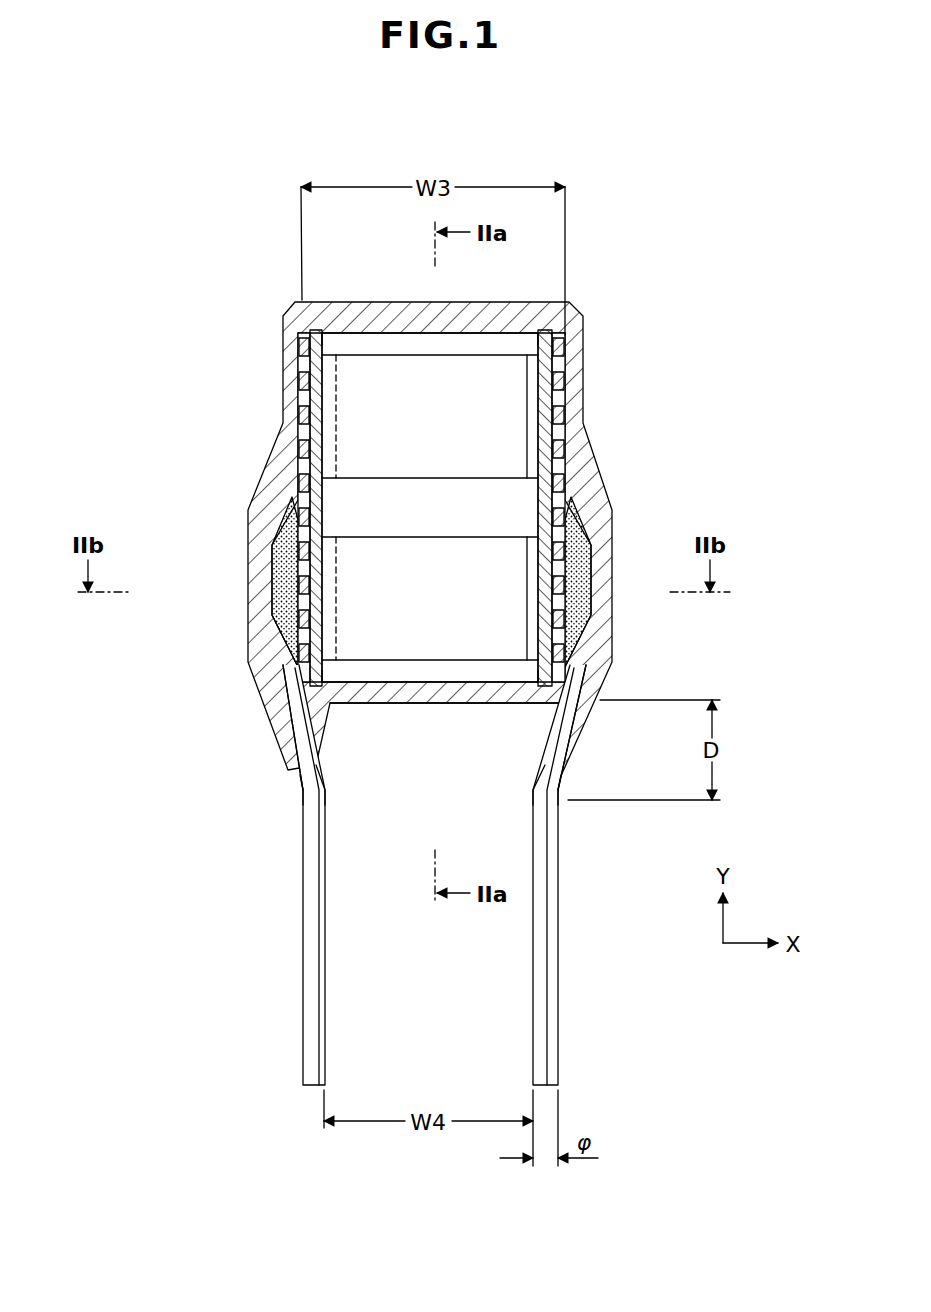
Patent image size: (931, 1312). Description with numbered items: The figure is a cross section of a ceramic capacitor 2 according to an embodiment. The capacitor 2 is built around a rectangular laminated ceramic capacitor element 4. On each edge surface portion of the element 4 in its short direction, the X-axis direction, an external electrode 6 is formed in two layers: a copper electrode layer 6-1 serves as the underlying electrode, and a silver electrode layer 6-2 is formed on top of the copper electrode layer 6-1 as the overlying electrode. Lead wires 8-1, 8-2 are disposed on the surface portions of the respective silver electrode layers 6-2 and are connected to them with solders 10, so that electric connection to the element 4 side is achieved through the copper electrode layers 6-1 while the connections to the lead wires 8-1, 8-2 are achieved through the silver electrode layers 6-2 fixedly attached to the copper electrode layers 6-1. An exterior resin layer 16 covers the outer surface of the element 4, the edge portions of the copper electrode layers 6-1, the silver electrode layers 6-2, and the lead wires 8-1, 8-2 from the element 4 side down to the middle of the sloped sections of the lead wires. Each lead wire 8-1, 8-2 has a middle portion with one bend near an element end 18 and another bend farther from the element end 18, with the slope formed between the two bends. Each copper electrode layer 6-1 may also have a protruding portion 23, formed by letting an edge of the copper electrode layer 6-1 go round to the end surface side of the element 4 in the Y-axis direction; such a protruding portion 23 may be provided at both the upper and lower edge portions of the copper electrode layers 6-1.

The ceramic capacitor 2 is at (165, 305).
The laminated ceramic capacitor element 4 is at (203, 330).
The external electrode 6 is at (190, 236).
The copper electrode layer 6-1 is at (306, 332).
The silver electrode layer 6-2 is at (294, 330).
The lead wire 8-1 is at (300, 978).
The lead wire 8-2 is at (560, 984).
The solder 10 is at (291, 525).
The exterior resin layer 16 is at (586, 433).
The element end 18 is at (438, 705).
The protruding portion 23 is at (327, 332).